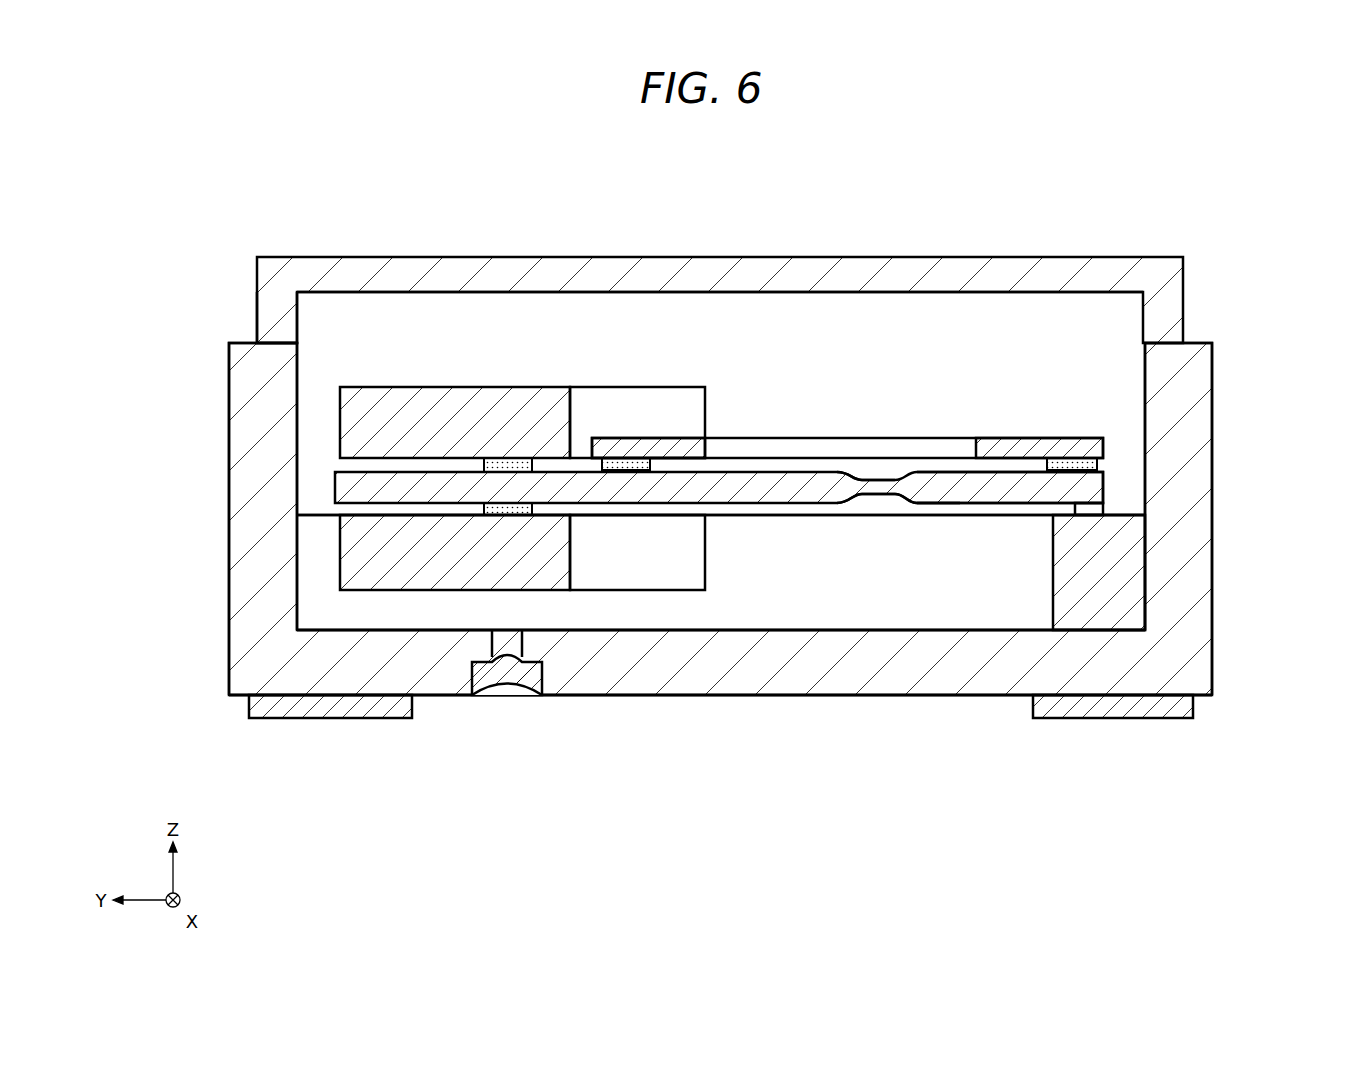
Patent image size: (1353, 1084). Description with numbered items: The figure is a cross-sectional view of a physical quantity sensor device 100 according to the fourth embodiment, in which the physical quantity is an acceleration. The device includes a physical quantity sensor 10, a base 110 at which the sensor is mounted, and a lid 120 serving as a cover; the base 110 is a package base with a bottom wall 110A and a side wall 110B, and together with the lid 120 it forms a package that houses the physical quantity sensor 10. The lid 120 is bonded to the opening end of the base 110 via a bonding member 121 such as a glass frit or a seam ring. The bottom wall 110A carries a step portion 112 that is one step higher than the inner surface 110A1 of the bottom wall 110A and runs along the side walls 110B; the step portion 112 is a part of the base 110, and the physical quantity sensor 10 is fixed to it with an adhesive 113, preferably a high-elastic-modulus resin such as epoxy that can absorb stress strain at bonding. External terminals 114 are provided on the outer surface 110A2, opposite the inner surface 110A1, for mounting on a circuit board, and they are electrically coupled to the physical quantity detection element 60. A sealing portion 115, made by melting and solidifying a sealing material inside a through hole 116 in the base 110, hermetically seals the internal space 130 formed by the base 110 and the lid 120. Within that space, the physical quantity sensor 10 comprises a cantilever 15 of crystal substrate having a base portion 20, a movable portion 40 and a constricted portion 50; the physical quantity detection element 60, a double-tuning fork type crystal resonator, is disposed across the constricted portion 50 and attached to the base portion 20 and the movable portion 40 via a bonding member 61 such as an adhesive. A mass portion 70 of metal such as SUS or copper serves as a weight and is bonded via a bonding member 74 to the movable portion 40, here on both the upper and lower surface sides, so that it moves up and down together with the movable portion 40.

The physical quantity sensor device 100 is at (1045, 185).
The base 110 is at (1185, 667).
The bottom wall 110A is at (672, 697).
The inner surface 110A1 is at (722, 627).
The outer surface 110A2 is at (865, 697).
The side wall 110B is at (229, 427).
The step portion 112 is at (315, 606).
The adhesive 113 is at (1103, 507).
The external terminal 114 is at (337, 718).
The sealing portion 115 is at (518, 697).
The through hole 116 is at (487, 695).
The lid 120 is at (682, 263).
The bonding member 121 is at (257, 318).
The internal space 130 is at (802, 313).
The physical quantity sensor 10 is at (940, 410).
The cantilever 15 is at (940, 500).
The base portion 20 is at (1012, 492).
The movable portion 40 is at (790, 490).
The constricted portion 50 is at (883, 496).
The physical quantity detection element 60 is at (853, 440).
The bonding member 61 is at (627, 463).
The mass portion 70 is at (449, 387).
The bonding member 74 is at (505, 462).